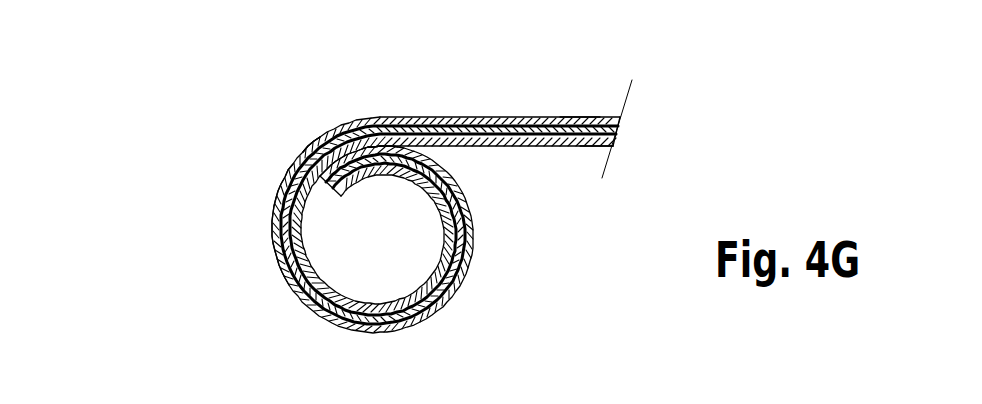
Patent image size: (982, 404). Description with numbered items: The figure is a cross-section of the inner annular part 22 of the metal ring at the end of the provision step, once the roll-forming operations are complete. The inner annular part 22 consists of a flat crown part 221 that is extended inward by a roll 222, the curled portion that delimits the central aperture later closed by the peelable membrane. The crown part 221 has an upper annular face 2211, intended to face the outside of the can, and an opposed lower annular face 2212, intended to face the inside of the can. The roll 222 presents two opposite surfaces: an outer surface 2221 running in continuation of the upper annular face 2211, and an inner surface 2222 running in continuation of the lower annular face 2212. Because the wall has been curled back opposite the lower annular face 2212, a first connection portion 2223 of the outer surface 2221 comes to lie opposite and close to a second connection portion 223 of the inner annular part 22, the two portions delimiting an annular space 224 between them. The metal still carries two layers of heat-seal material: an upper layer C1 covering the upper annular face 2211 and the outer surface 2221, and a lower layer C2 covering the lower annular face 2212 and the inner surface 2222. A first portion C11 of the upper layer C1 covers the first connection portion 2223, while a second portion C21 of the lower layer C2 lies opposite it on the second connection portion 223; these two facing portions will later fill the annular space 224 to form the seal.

The inner annular part 22 is at (562, 147).
The crown part 221 is at (605, 109).
The upper annular face 2211 is at (519, 118).
The lower annular face 2212 is at (511, 151).
The roll 222 is at (289, 272).
The outer surface 2221 is at (449, 302).
The inner surface 2222 is at (355, 287).
The first connection portion 2223 is at (317, 127).
The second connection portion 223 is at (394, 119).
The annular space 224 is at (441, 152).
The upper layer C1 is at (584, 117).
The lower layer C2 is at (594, 147).
The first portion C11 is at (306, 143).
The second portion C21 is at (311, 144).